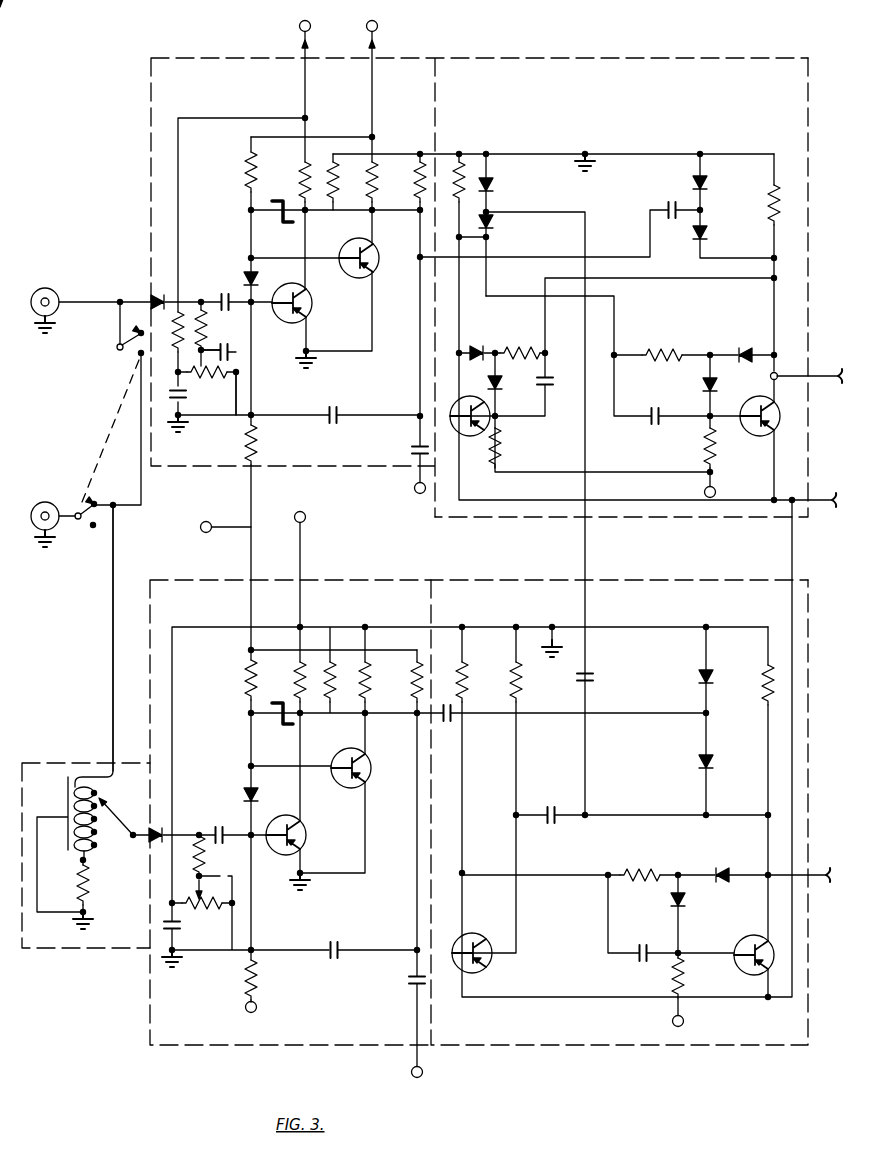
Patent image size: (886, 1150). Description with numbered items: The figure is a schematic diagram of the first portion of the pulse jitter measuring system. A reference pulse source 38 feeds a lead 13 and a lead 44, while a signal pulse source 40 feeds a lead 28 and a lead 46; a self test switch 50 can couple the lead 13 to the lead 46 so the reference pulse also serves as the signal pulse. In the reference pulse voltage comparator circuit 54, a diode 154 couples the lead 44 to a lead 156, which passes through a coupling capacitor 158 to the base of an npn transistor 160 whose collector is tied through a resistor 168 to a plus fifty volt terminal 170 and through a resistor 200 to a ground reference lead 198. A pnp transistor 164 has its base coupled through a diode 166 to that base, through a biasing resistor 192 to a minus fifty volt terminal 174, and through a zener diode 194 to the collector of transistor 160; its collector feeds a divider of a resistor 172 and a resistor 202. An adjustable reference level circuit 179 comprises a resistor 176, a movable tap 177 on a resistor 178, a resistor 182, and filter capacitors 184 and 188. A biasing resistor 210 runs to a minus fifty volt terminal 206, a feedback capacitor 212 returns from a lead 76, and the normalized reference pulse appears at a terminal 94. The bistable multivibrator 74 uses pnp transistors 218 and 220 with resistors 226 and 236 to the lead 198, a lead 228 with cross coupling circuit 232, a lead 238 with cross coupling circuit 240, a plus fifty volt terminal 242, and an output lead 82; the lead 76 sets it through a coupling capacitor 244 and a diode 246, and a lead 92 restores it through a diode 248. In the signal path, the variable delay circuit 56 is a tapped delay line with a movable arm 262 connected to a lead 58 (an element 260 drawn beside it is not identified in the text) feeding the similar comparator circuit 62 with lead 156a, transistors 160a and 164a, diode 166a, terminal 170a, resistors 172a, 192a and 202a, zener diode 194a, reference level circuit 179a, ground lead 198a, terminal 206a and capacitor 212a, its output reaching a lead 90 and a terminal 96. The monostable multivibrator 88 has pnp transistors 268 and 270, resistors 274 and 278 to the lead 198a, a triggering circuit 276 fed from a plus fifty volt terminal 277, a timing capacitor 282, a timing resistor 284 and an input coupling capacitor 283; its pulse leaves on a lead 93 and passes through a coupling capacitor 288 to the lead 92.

The lead 13 is at (72, 306).
The lead 28 is at (74, 522).
The reference pulse source 38 is at (45, 288).
The signal pulse source 40 is at (45, 502).
The lead 44 is at (181, 286).
The lead 46 is at (112, 604).
The self test switch 50 is at (128, 430).
The reference pulse voltage comparator circuit 54 is at (158, 100).
The variable delay circuit 56 is at (52, 948).
The lead 58 is at (140, 837).
The pulse voltage comparator circuit 62 is at (196, 1045).
The bistable multivibrator circuit 74 is at (601, 68).
The lead 76 is at (602, 258).
The lead 82 is at (788, 375).
The monostable multivibrator 88 is at (586, 1045).
The lead 90 is at (428, 730).
The lead 92 is at (587, 614).
The lead 93 is at (805, 873).
The terminal 94 is at (414, 492).
The terminal 96 is at (423, 1073).
The diode 154 is at (152, 296).
The lead 156 is at (222, 296).
The lead 156a is at (205, 830).
The coupling capacitor 158 is at (219, 330).
The npn type transistor 160 is at (313, 303).
The npn type transistor 160a is at (305, 834).
The pnp type transistor 164 is at (376, 254).
The pnp type transistor 164a is at (368, 757).
The diode 166 is at (248, 278).
The diode 166a is at (251, 792).
The resistor 168 is at (300, 178).
The +50 volt terminal 170 is at (303, 40).
The +50 volt terminal 170a is at (318, 520).
The resistor 172 is at (377, 188).
The resistor 172a is at (424, 650).
The -50 volt terminal 174 is at (376, 53).
The resistor 176 is at (210, 352).
The movable tap 177 is at (240, 372).
The resistor 178 is at (188, 392).
The adjustable reference level circuit 179 is at (190, 420).
The adjustable reference level circuit 179a is at (193, 932).
The resistor 182 is at (177, 313).
The filter capacitor 184 is at (218, 394).
The filter capacitor 188 is at (238, 354).
The biasing resistor 192 is at (244, 167).
The biasing resistor 192a is at (245, 682).
The zener diode 194 is at (270, 220).
The zener diode 194a is at (270, 722).
The ground reference lead 198 is at (490, 158).
The ground lead 198a is at (436, 627).
The resistor 200 is at (336, 204).
The resistor 202 is at (416, 196).
The resistor 202a is at (370, 684).
The -50 volt terminal 206 is at (208, 521).
The -50 volt terminal 206a is at (258, 1007).
The biasing resistor 210 is at (256, 446).
The feedback capacitor 212 is at (339, 410).
The feedback capacitor 212a is at (336, 948).
The pnp type transistor 218 is at (498, 445).
The pnp type transistor 220 is at (752, 436).
The resistor 226 is at (462, 160).
The lead 228 is at (487, 284).
The cross coupling circuit 232 is at (695, 386).
The resistor 236 is at (768, 200).
The lead 238 is at (690, 265).
The cross coupling circuit 240 is at (500, 387).
The +50 volt terminal 242 is at (714, 488).
The coupling capacitor 244 is at (673, 204).
The diode 246 is at (704, 232).
The diode 248 is at (495, 222).
The resistor 260 is at (75, 862).
The movable arm 262 is at (114, 818).
The pnp type transistor 268 is at (484, 970).
The pnp type transistor 270 is at (746, 972).
The resistor 274 is at (468, 672).
The triggering circuit 276 is at (671, 918).
The +50 volt terminal 277 is at (672, 1021).
The resistor 278 is at (760, 692).
The timing capacitor 282 is at (555, 808).
The coupling capacitor 283 is at (453, 722).
The timing resistor 284 is at (510, 687).
The coupling capacitor 288 is at (588, 680).